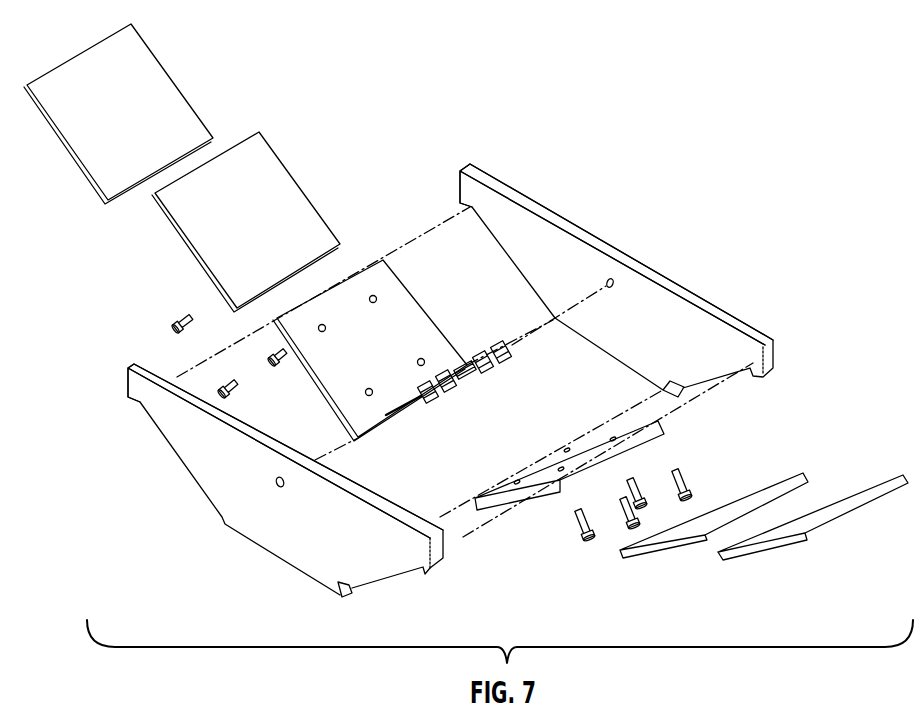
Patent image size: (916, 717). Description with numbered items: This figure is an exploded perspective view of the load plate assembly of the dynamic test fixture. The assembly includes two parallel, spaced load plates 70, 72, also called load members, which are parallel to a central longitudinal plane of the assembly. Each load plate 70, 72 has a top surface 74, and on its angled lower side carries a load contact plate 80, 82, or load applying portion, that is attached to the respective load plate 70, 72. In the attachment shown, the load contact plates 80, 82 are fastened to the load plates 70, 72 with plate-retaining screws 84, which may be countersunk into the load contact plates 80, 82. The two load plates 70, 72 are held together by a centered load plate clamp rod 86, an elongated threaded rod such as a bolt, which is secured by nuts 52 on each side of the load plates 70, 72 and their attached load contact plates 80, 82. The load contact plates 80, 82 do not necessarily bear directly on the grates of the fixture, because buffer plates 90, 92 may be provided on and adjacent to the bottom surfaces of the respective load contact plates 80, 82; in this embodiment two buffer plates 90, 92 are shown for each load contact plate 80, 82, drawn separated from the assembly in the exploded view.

The nuts 52 is at (506, 342).
The load plate 70 is at (293, 542).
The load plate 72 is at (657, 303).
The top surface 74 is at (147, 371).
The load contact plate 80 is at (363, 280).
The load contact plate 82 is at (645, 437).
The plate-retaining screws 84 is at (575, 523).
The load plate clamp rod 86 is at (470, 377).
The buffer plates 90 is at (168, 118).
The buffer plates 92 is at (830, 507).